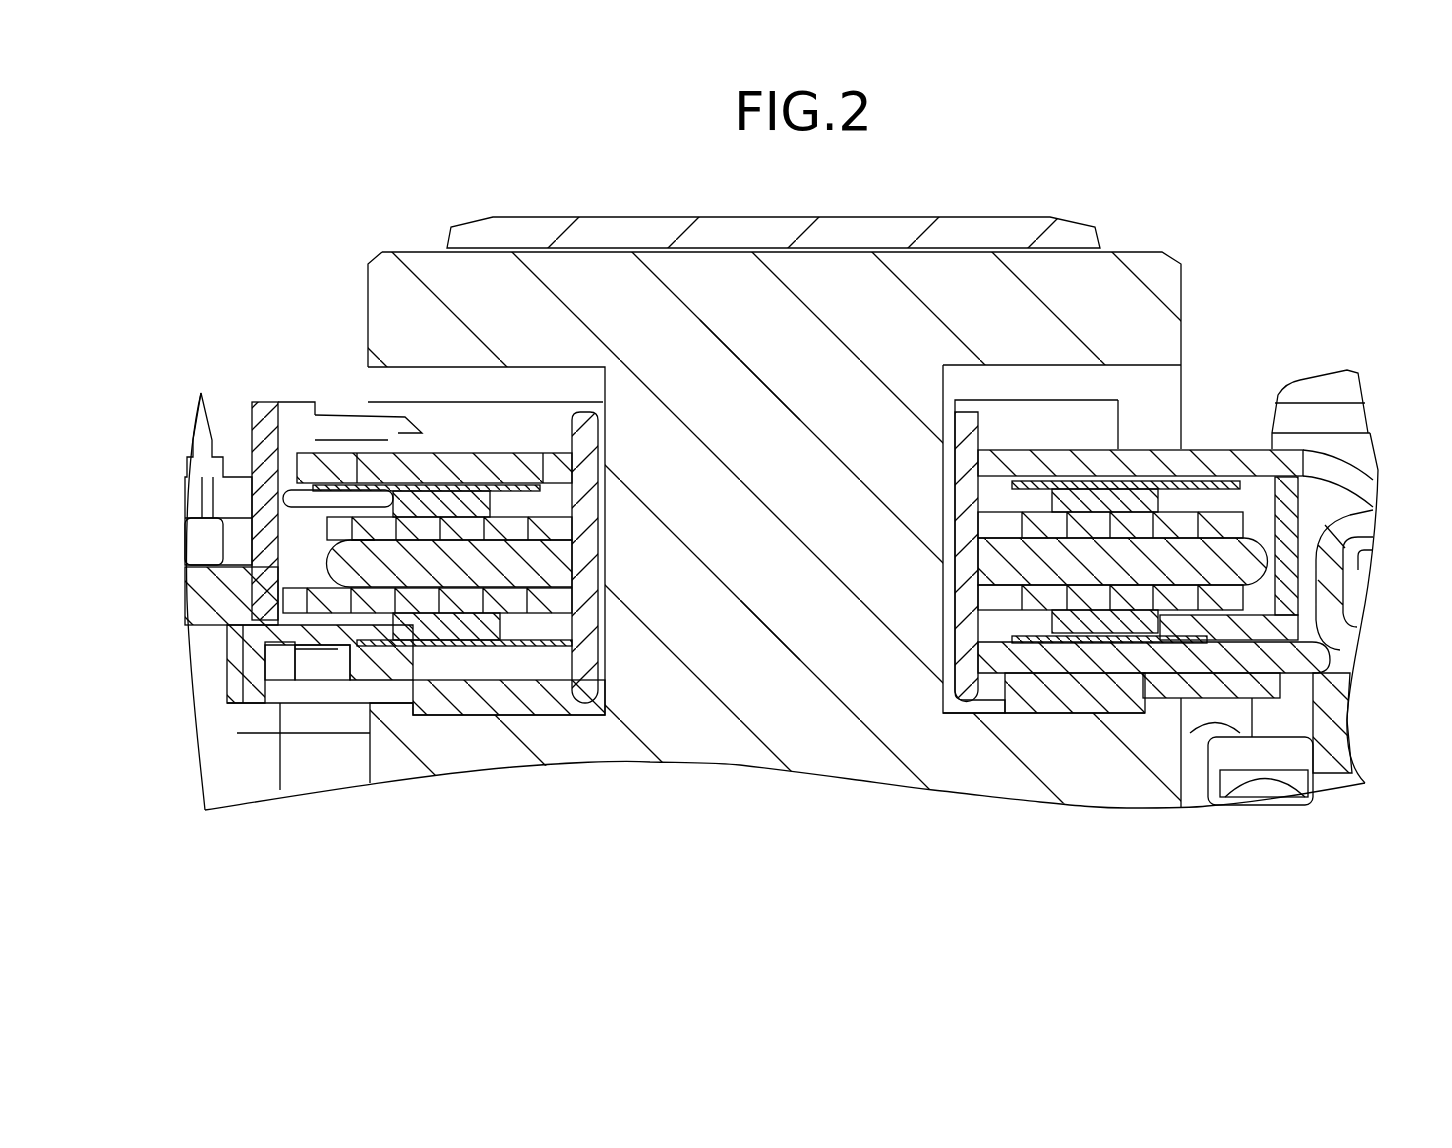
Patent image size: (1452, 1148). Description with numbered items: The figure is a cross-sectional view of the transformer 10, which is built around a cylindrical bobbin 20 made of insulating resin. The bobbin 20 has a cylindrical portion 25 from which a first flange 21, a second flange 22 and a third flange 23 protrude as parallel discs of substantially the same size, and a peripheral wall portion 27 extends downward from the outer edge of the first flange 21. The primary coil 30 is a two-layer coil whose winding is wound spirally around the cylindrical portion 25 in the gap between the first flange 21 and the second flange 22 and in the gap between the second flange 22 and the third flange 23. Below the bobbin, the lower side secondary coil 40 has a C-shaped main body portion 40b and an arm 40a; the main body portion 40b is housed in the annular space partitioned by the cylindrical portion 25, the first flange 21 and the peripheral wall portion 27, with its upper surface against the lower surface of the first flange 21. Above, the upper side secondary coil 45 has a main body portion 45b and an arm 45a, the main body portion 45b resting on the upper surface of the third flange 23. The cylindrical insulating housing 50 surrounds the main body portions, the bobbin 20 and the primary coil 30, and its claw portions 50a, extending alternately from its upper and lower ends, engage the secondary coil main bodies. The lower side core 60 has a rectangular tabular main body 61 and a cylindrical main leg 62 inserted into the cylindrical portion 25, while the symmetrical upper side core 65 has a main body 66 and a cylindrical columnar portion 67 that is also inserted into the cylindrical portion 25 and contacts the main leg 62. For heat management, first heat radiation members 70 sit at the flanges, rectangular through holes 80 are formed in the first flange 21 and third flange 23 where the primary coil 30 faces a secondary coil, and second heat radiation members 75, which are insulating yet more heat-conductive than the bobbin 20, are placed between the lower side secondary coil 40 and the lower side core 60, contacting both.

The transformer 10 is at (1210, 210).
The cylindrical bobbin 20 is at (980, 438).
The first flange 21 is at (337, 632).
The second flange 22 is at (515, 570).
The third flange 23 is at (540, 480).
The cylindrical portion 25 is at (600, 544).
The peripheral wall portion 27 is at (228, 673).
The primary coil 30 is at (300, 572).
The lower side secondary coil 40 is at (310, 667).
The arm 40a is at (1333, 580).
The main body portion 40b is at (1170, 660).
The upper side secondary coil 45 is at (1213, 447).
The arm 45a is at (1374, 492).
The main body portion 45b is at (1142, 460).
The housing 50 is at (252, 418).
The claw portion 50a is at (355, 410).
The lower side core 60 is at (856, 762).
The main body 61 is at (1042, 745).
The main leg 62 is at (774, 575).
The upper side core 65 is at (367, 282).
The main body 66 is at (975, 283).
The cylindrical columnar portion 67 is at (774, 440).
The first heat radiation member 70 is at (513, 490).
The second heat radiation member 75 is at (470, 700).
The through hole 80 is at (450, 486).